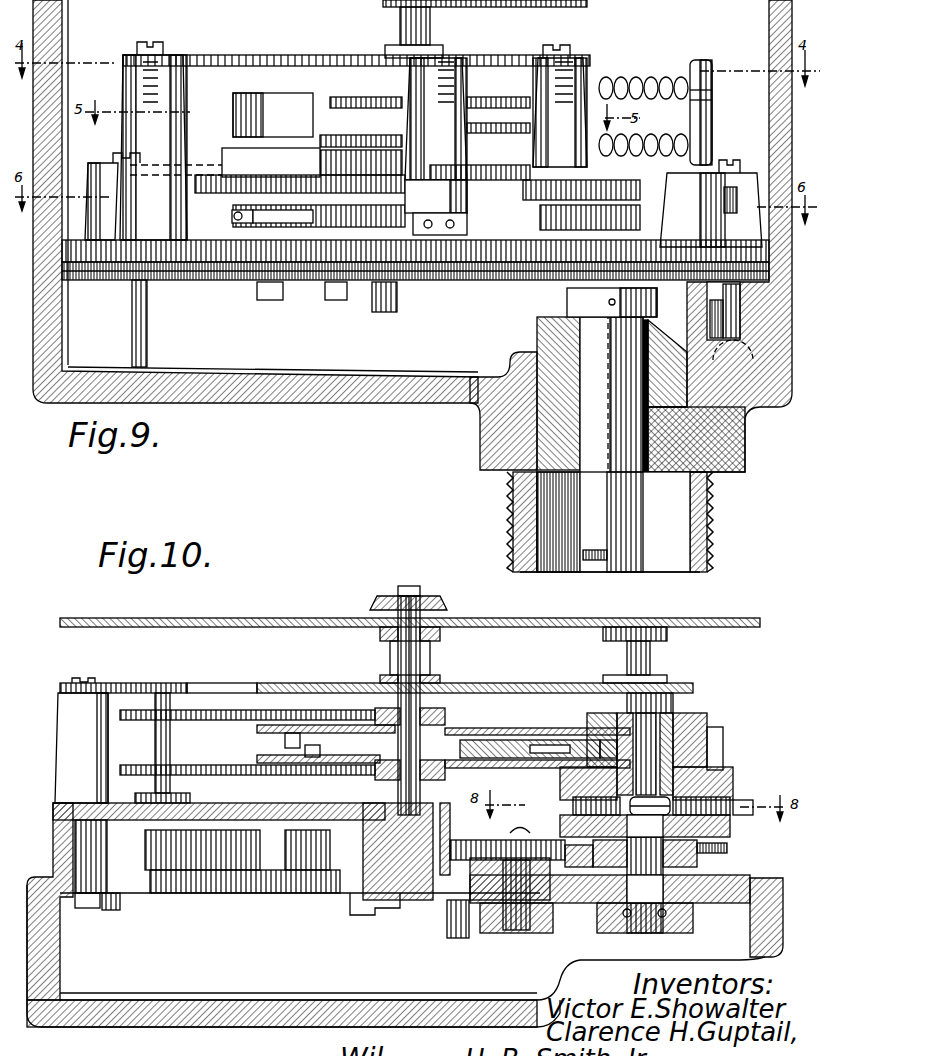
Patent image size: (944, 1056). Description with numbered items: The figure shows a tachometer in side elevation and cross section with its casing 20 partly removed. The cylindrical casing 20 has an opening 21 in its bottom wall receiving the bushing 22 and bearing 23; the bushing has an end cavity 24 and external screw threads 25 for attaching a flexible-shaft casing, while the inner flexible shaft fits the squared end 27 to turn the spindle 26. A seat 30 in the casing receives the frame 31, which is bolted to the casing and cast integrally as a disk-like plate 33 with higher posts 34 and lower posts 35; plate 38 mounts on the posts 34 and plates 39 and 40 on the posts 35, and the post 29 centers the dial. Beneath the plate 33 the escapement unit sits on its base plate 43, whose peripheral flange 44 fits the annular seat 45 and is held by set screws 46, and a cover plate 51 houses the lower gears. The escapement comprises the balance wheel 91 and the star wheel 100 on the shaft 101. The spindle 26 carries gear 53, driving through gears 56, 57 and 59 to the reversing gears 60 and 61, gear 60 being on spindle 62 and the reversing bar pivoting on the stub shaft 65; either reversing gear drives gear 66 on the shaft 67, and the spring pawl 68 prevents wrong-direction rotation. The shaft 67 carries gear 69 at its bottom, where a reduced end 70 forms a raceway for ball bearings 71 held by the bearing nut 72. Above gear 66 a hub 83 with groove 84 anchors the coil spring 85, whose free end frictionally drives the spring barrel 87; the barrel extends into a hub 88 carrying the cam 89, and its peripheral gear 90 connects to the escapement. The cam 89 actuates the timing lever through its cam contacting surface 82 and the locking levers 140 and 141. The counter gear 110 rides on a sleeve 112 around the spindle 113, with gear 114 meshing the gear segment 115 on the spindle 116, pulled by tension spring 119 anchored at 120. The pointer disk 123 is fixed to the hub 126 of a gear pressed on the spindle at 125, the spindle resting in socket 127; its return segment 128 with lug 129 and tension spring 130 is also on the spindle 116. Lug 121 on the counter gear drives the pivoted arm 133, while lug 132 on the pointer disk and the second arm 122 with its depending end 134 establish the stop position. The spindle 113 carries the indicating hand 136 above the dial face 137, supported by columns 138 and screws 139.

In FIG. 9, the casing 20 is at (272, 396).
In FIG. 9, the opening 21 is at (478, 440).
In FIG. 9, the bushing 22 is at (700, 450).
In FIG. 9, the bearing 23 is at (660, 425).
In FIG. 9, the cavity 24 is at (680, 500).
In FIG. 9, the screw threads 25 is at (715, 523).
In FIG. 9, the spindle 26 is at (595, 340).
In FIG. 9, the squared end 27 is at (628, 552).
In FIG. 9, the post 29 is at (415, 25).
In FIG. 9, the seat 30 is at (758, 272).
In FIG. 9, the frame 31 is at (220, 275).
In FIG. 9, the disk-like plate 33 is at (82, 225).
In FIG. 10, the disk-like plate 33 is at (428, 902).
In FIG. 9, the higher posts 34 is at (123, 137).
In FIG. 10, the higher posts 34 is at (72, 748).
In FIG. 9, the lower posts 35 is at (97, 182).
In FIG. 9, the plate 38 is at (232, 58).
In FIG. 9, the plate 39 is at (203, 163).
In FIG. 9, the plate 40 is at (556, 180).
In FIG. 10, the base plate 43 is at (250, 880).
In FIG. 10, the peripheral flange 44 is at (80, 902).
In FIG. 10, the annular seat 45 is at (53, 872).
In FIG. 10, the set screws 46 is at (118, 903).
In FIG. 10, the cover plate 51 is at (460, 920).
In FIG. 9, the gear 53 is at (567, 298).
In FIG. 9, the gear 56 is at (690, 185).
In FIG. 9, the gear 57 is at (490, 190).
In FIG. 9, the gear 59 is at (523, 220).
In FIG. 10, the gear 60 is at (445, 924).
In FIG. 10, the gear 61 is at (455, 840).
In FIG. 10, the spindle 62 is at (470, 860).
In FIG. 10, the stub shaft 65 is at (460, 905).
In FIG. 9, the gear 66 is at (252, 225).
In FIG. 10, the gear 66 is at (579, 857).
In FIG. 10, the shaft 67 is at (660, 720).
In FIG. 9, the spring pawl 68 is at (232, 220).
In FIG. 10, the spring pawl 68 is at (727, 848).
In FIG. 10, the gear 69 is at (540, 932).
In FIG. 10, the reduced end 70 is at (650, 925).
In FIG. 10, the ball bearings 71 is at (642, 928).
In FIG. 10, the bearing nut 72 is at (600, 932).
In FIG. 10, the cam contacting surface 82 is at (602, 740).
In FIG. 10, the hub 83 is at (720, 780).
In FIG. 10, the groove 84 is at (710, 832).
In FIG. 10, the coil spring 85 is at (735, 800).
In FIG. 9, the spring barrel 87 is at (271, 162).
In FIG. 10, the spring barrel 87 is at (560, 782).
In FIG. 10, the hub 88 is at (690, 718).
In FIG. 9, the cam 89 is at (273, 115).
In FIG. 10, the cam 89 is at (723, 744).
In FIG. 9, the gear 90 is at (232, 195).
In FIG. 10, the gear 90 is at (520, 828).
In FIG. 10, the balance wheel 91 is at (180, 856).
In FIG. 10, the star wheel 100 is at (305, 850).
In FIG. 10, the shaft 101 is at (587, 761).
In FIG. 9, the counter gear 110 is at (498, 93).
In FIG. 10, the counter gear 110 is at (257, 728).
In FIG. 10, the sleeve 112 is at (425, 650).
In FIG. 10, the spindle 113 is at (425, 664).
In FIG. 10, the gear 114 is at (448, 730).
In FIG. 10, the gear segment 115 is at (237, 693).
In FIG. 10, the spindle 116 is at (158, 702).
In FIG. 9, the tension spring 119 is at (660, 78).
In FIG. 9, the anchor 120 is at (712, 117).
In FIG. 10, the lug 121 is at (283, 742).
In FIG. 10, the second arm 122 is at (540, 745).
In FIG. 9, the pointer disk 123 is at (498, 139).
In FIG. 10, the pointer disk 123 is at (340, 775).
In FIG. 10, the press fit 125 is at (436, 772).
In FIG. 10, the hub 126 is at (324, 746).
In FIG. 10, the socket 127 is at (449, 829).
In FIG. 10, the gear segment 128 is at (257, 758).
In FIG. 10, the lug 129 is at (375, 782).
In FIG. 9, the tension spring 130 is at (660, 135).
In FIG. 10, the lug 132 is at (247, 708).
In FIG. 10, the pivoted arm 133 is at (483, 740).
In FIG. 10, the depending end 134 is at (629, 711).
In FIG. 10, the indicating hand 136 is at (440, 604).
In FIG. 10, the dial face 137 is at (250, 618).
In FIG. 10, the columns 138 is at (652, 661).
In FIG. 10, the screws 139 is at (607, 618).
In FIG. 9, the locking lever 140 is at (385, 105).
In FIG. 10, the locking lever 140 is at (620, 722).
In FIG. 9, the locking lever 141 is at (361, 155).